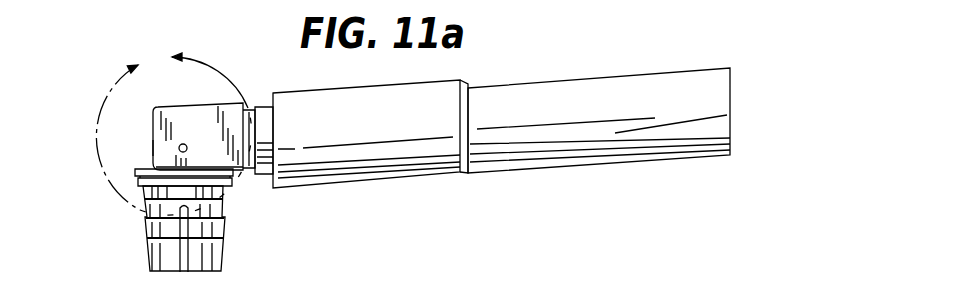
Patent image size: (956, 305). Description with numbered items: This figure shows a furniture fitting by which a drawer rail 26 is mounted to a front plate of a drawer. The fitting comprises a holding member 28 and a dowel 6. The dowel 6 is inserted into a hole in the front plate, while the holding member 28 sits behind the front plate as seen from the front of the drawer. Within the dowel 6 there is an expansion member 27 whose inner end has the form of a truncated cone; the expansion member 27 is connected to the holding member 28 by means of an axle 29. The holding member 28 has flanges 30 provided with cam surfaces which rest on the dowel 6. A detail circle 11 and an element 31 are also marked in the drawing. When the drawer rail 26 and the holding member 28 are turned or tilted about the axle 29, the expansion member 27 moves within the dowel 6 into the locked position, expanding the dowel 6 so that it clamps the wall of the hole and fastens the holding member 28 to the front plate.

The detail view circle 11 is at (173, 130).
The flanges 30 is at (153, 122).
The housing side wall 31 is at (166, 149).
The axle 29 is at (179, 150).
The holding member 28 is at (423, 148).
The drawer rail 26 is at (639, 127).
The dowel 6 is at (207, 245).
The expansion member 27 is at (178, 249).